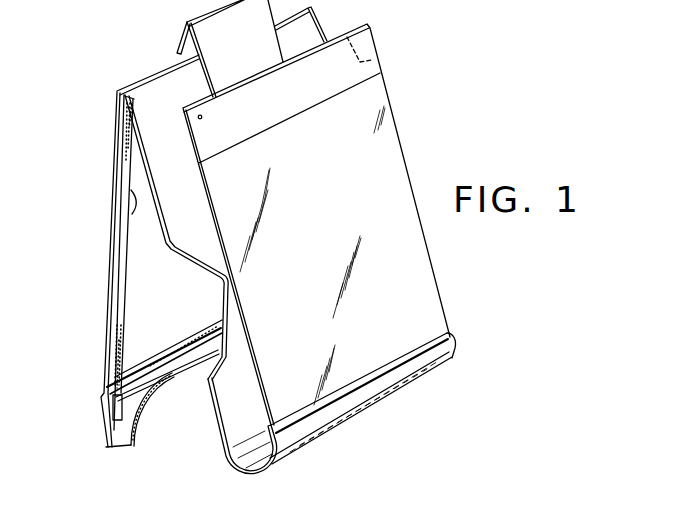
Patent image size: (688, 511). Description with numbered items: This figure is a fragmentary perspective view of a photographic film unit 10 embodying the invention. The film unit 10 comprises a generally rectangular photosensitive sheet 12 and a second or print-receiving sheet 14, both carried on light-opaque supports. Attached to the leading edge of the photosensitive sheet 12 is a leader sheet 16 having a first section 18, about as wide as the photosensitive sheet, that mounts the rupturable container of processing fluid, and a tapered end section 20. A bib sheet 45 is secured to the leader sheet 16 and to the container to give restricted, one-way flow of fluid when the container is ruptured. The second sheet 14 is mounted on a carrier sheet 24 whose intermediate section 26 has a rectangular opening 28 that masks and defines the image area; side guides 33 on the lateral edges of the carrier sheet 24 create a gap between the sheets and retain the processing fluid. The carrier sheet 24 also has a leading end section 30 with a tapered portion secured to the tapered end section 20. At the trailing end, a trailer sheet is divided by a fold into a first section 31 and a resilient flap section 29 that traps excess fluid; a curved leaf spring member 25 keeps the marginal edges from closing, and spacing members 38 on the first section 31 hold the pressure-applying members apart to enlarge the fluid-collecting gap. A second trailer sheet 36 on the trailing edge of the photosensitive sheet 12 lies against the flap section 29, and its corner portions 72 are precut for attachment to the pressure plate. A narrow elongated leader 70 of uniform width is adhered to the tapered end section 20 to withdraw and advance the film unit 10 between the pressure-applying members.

The film unit 10 is at (110, 56).
The photosensitive sheet 12 is at (322, 246).
The second sheet 14 is at (190, 305).
The leader sheet 16 is at (230, 444).
The first section 18 is at (448, 335).
The tapered end section 20 is at (229, 323).
The carrier sheet 24 is at (118, 124).
The leaf spring member 25 is at (140, 411).
The intermediate section 26 is at (122, 172).
The opening 28 is at (132, 197).
The second resilient flap section 29 is at (192, 383).
The leading end section 30 is at (191, 250).
The first section 31 is at (127, 446).
The side guides 33 is at (125, 190).
The second trailer sheet 36 is at (338, 80).
The spacing members 38 is at (115, 431).
The bib sheet 45 is at (453, 352).
The leader 70 is at (250, 40).
The corner portions 72 is at (368, 43).